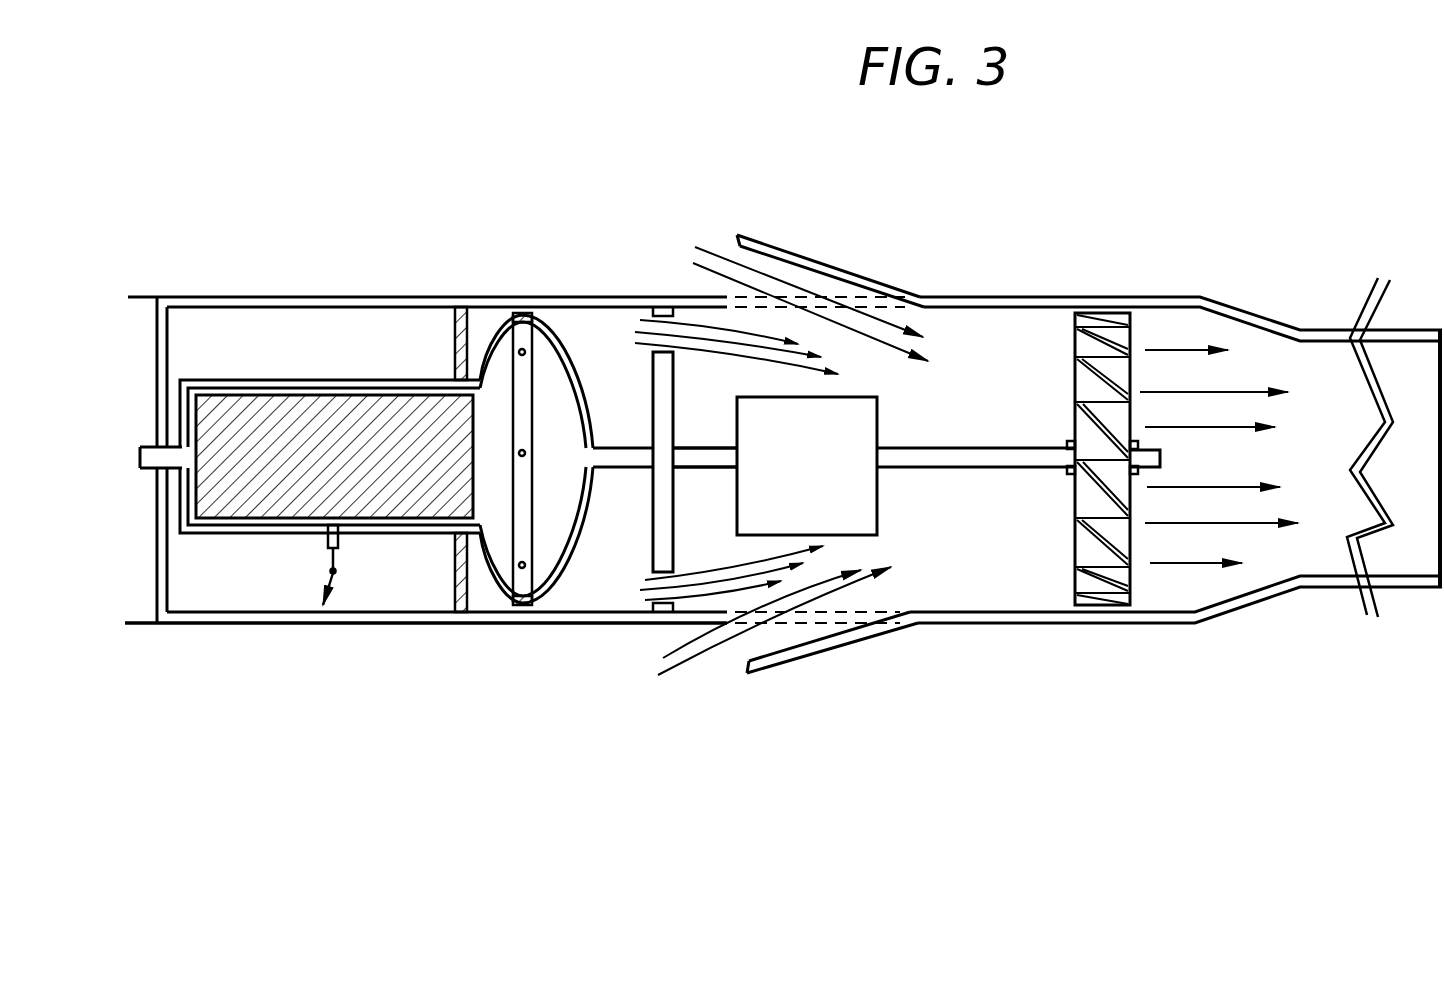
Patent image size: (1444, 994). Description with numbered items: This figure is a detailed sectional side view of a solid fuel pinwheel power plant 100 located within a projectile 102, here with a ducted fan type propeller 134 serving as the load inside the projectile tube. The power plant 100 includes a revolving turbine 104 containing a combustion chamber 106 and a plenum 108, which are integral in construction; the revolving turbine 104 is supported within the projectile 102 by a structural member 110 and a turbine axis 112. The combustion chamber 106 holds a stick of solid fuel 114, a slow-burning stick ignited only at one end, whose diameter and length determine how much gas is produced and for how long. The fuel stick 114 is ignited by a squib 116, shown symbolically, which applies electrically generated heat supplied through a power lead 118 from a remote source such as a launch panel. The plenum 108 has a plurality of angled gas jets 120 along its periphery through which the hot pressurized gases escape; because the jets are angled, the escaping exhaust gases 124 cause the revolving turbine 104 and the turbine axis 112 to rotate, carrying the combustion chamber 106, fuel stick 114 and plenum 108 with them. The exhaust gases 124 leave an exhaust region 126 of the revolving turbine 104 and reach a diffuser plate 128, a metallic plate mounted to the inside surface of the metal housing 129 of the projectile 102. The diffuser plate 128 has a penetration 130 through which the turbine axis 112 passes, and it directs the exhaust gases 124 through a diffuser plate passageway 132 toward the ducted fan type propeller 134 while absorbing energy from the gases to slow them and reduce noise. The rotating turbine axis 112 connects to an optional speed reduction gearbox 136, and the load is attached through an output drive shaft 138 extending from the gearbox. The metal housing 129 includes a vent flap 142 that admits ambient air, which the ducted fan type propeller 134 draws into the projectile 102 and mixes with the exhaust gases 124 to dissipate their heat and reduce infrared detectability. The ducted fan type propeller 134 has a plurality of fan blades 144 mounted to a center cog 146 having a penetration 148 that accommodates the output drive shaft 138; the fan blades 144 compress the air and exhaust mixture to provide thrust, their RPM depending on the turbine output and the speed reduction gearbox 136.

The solid fuel pinwheel power plant 100 is at (398, 260).
The projectile 102 is at (257, 293).
The revolving turbine 104 is at (428, 358).
The combustion chamber 106 is at (262, 378).
The plenum 108 is at (575, 395).
The structural member 110 is at (460, 580).
The turbine axis 112 is at (148, 470).
The solid fuel stick 114 is at (275, 485).
The squib 116 is at (340, 537).
The power lead 118 is at (328, 574).
The gas jets 120 is at (525, 352).
The exhaust gases 124 is at (845, 362).
The exhaust region 126 is at (578, 585).
The diffuser plate 128 is at (677, 374).
The metal housing 129 is at (213, 620).
The penetration 130 is at (673, 452).
The diffuser plate passageway 132 is at (660, 316).
The ducted fan type propeller 134 is at (1103, 614).
The speed reduction gearbox 136 is at (880, 432).
The output drive shaft 138 is at (925, 472).
The vent flap 142 is at (825, 262).
The fan blades 144 is at (1080, 348).
The center cog 146 is at (1068, 442).
The penetration 148 is at (1062, 470).